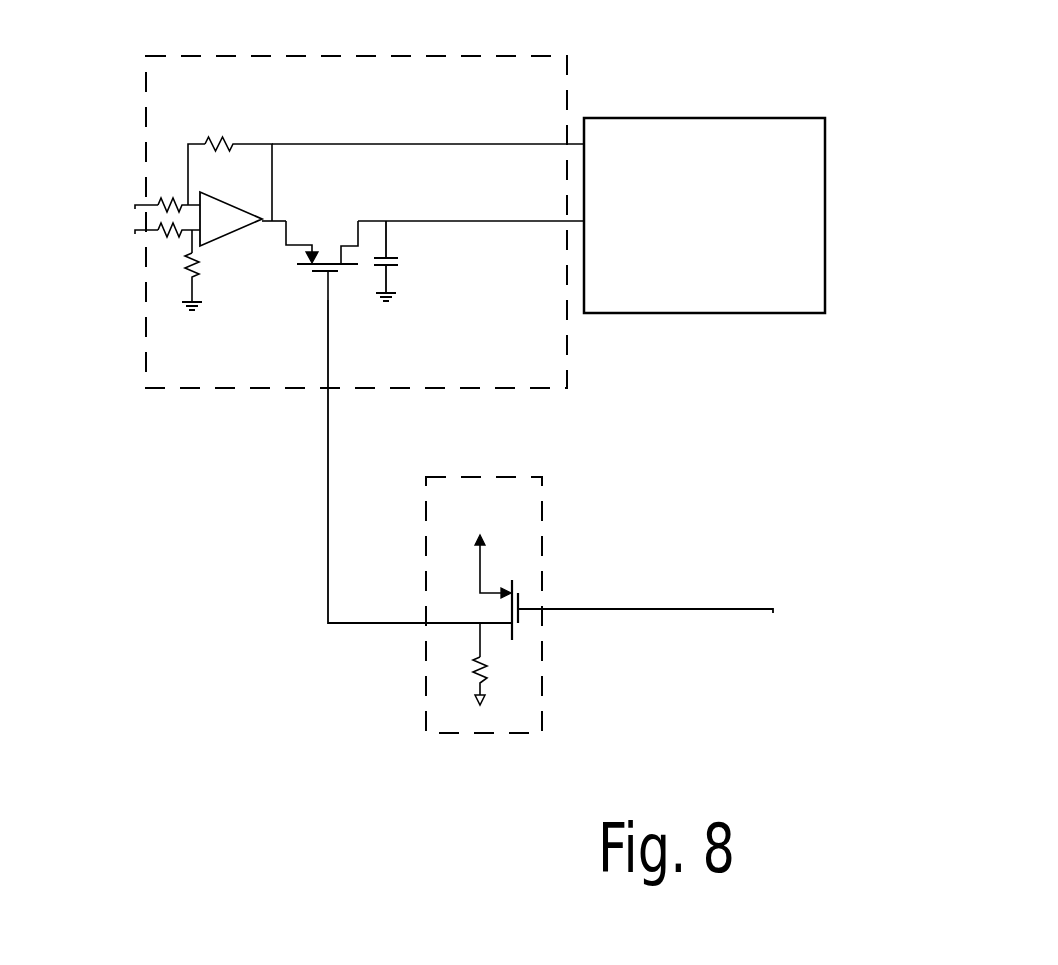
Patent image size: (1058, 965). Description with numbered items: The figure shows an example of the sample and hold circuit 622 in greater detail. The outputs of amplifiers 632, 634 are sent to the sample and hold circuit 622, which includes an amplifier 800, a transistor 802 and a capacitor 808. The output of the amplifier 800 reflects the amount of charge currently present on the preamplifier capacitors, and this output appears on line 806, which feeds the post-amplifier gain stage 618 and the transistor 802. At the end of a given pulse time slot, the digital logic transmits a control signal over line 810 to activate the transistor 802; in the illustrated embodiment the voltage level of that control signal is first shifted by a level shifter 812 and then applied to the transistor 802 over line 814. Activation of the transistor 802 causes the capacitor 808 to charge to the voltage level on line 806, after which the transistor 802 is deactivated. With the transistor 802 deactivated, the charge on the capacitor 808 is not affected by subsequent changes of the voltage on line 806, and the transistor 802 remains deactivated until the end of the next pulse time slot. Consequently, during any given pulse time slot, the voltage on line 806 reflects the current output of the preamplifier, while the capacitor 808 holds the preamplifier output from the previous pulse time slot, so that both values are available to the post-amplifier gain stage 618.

The sample and hold circuit 622 is at (337, 55).
The amplifier 800 is at (236, 233).
The transistor 802 is at (330, 275).
The line 806 is at (288, 221).
The capacitor 808 is at (402, 265).
The post-amplifier gain stage 618 is at (704, 215).
The line 814 is at (329, 516).
The level shifter 812 is at (470, 477).
The line 810 is at (665, 610).
The amplifier 632 is at (112, 202).
The amplifier 634 is at (112, 228).